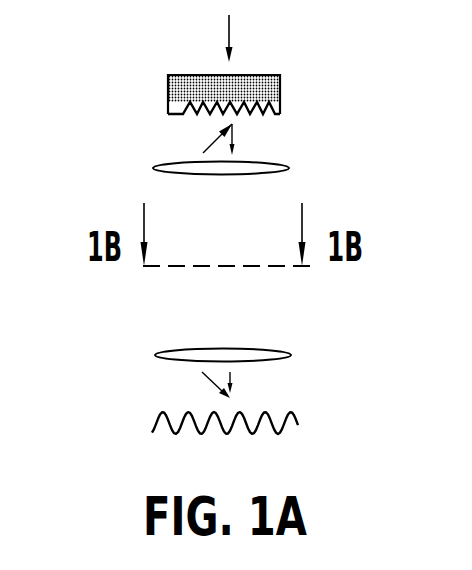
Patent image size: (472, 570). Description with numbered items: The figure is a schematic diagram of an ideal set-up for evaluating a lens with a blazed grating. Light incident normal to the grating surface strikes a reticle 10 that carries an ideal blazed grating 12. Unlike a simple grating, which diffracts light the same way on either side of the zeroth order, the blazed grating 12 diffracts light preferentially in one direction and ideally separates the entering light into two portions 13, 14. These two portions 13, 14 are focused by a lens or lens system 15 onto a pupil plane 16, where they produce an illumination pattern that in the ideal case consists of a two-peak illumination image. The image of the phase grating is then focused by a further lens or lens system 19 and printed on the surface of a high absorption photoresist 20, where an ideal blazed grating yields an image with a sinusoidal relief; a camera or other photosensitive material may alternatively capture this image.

The reticle 10 is at (282, 82).
The blazed grating 12 is at (255, 113).
The first light portion 13 is at (207, 143).
The second light portion 14 is at (235, 140).
The lens or lens system 15 is at (155, 168).
The pupil plane 16 is at (253, 267).
The lens or lens system 19 is at (155, 357).
The high absorption photoresist 20 is at (298, 420).